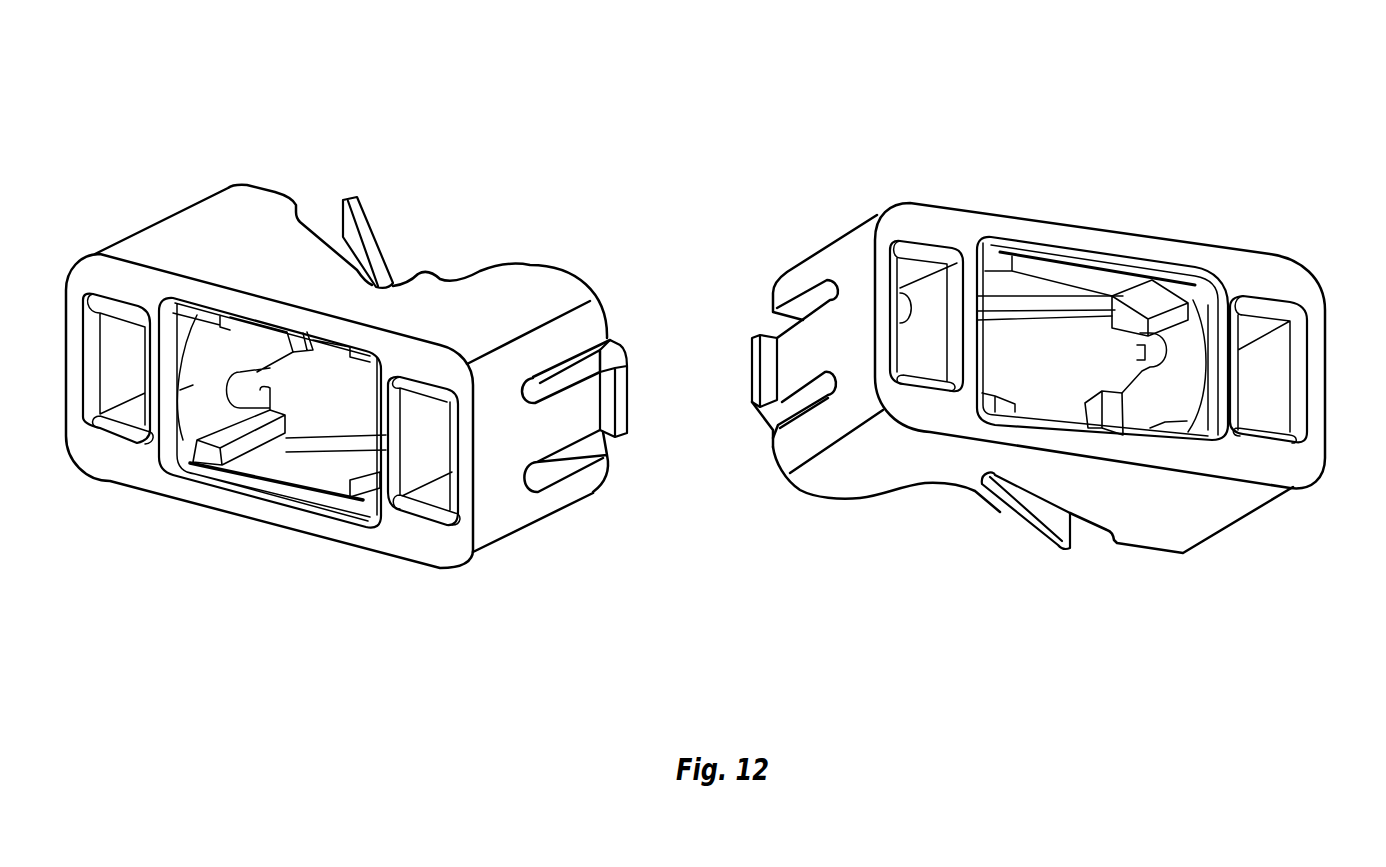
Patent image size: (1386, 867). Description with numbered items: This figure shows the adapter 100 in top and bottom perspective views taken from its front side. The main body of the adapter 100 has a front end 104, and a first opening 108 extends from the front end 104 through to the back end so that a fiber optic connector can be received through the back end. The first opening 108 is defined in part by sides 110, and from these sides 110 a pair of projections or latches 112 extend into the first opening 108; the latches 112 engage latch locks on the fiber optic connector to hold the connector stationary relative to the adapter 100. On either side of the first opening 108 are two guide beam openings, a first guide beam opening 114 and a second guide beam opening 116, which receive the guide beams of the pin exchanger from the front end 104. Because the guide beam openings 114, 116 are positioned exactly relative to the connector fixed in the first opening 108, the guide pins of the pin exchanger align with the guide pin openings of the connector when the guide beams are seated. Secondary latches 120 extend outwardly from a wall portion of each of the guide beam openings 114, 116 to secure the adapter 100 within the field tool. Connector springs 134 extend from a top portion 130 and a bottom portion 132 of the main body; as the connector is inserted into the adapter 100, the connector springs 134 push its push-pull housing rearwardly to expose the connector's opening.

The adapter 100 is at (504, 130).
The front end 104 is at (425, 555).
The first opening 108 is at (306, 476).
The sides 110 is at (187, 385).
The latches 112 is at (1093, 404).
The first guide beam opening 114 is at (118, 427).
The second guide beam opening 116 is at (440, 497).
The secondary latches 120 is at (750, 373).
The top portion 130 is at (527, 283).
The bottom portion 132 is at (1183, 556).
The connector springs 134 is at (361, 204).